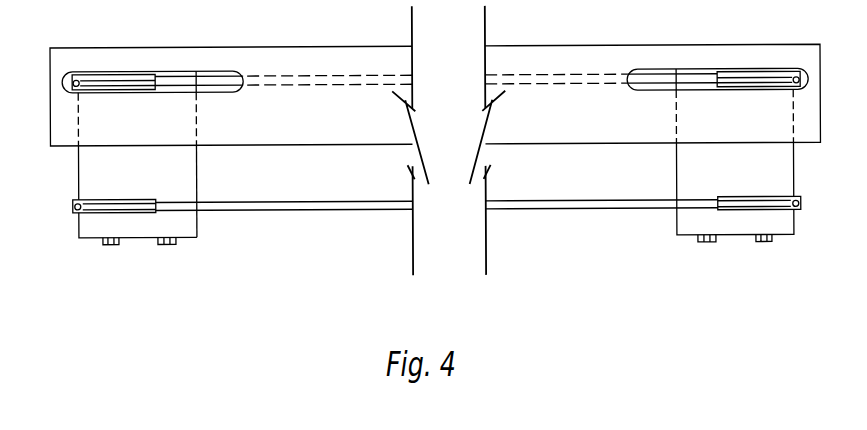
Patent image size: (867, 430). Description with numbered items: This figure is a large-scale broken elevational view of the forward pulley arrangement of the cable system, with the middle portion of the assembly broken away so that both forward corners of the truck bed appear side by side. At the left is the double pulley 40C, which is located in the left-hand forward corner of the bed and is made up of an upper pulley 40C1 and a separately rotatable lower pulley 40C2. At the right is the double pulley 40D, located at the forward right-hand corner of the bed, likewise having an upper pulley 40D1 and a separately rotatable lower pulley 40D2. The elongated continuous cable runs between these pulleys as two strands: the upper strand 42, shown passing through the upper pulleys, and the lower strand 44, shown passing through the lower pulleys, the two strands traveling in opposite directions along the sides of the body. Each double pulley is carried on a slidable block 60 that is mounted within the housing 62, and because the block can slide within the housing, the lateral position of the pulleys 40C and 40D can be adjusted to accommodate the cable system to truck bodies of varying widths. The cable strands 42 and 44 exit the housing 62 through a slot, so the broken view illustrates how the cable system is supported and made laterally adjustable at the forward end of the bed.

The housing 62 is at (246, 47).
The upper strand 42 is at (566, 89).
The lower strand 44 is at (567, 214).
The slidable block 60 is at (197, 176).
The double pulley 40C is at (64, 176).
The upper pulley 40C1 is at (118, 74).
The lower pulley 40C2 is at (96, 214).
The double pulley 40D is at (663, 177).
The upper pulley 40D1 is at (736, 74).
The lower pulley 40D2 is at (775, 216).